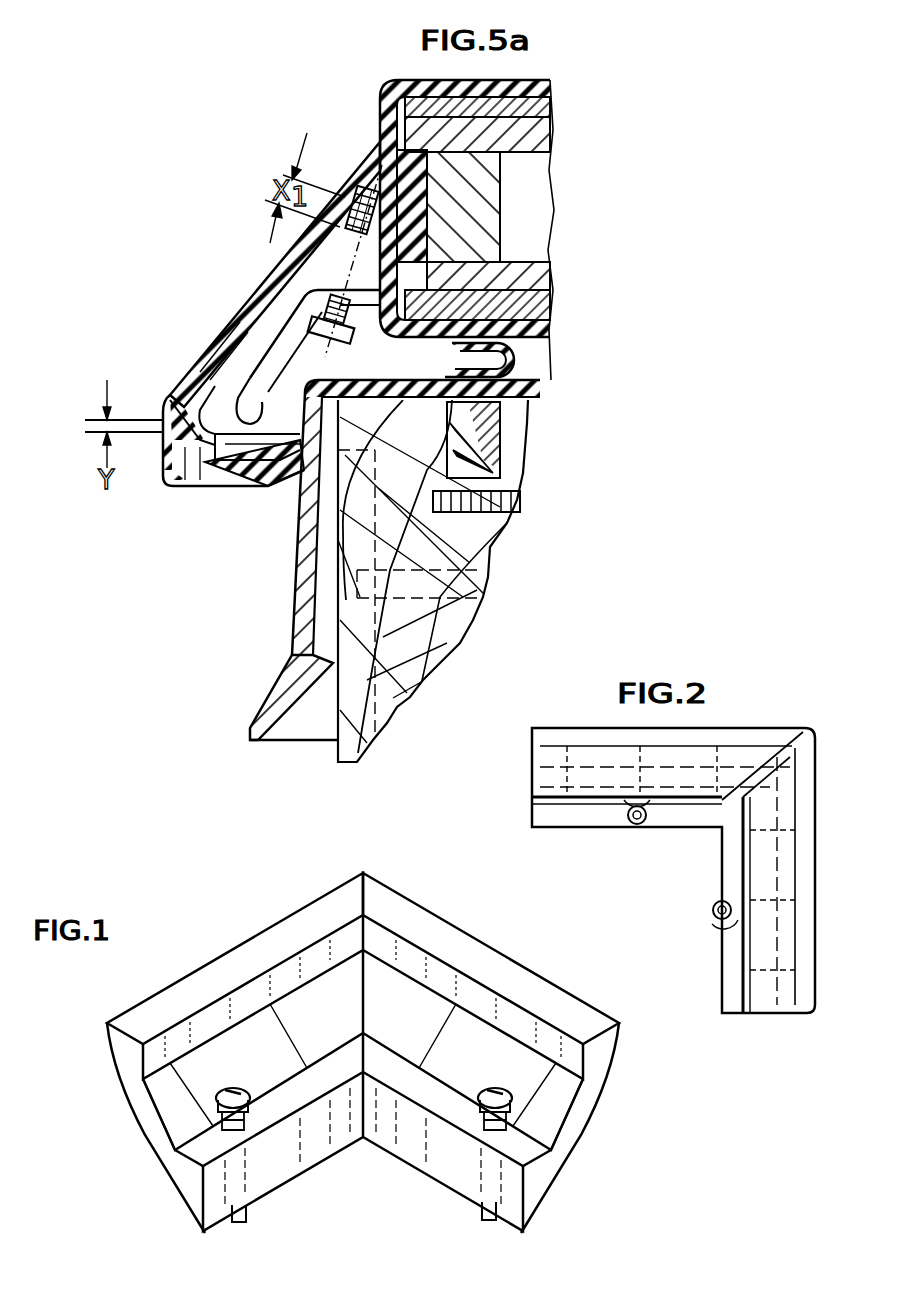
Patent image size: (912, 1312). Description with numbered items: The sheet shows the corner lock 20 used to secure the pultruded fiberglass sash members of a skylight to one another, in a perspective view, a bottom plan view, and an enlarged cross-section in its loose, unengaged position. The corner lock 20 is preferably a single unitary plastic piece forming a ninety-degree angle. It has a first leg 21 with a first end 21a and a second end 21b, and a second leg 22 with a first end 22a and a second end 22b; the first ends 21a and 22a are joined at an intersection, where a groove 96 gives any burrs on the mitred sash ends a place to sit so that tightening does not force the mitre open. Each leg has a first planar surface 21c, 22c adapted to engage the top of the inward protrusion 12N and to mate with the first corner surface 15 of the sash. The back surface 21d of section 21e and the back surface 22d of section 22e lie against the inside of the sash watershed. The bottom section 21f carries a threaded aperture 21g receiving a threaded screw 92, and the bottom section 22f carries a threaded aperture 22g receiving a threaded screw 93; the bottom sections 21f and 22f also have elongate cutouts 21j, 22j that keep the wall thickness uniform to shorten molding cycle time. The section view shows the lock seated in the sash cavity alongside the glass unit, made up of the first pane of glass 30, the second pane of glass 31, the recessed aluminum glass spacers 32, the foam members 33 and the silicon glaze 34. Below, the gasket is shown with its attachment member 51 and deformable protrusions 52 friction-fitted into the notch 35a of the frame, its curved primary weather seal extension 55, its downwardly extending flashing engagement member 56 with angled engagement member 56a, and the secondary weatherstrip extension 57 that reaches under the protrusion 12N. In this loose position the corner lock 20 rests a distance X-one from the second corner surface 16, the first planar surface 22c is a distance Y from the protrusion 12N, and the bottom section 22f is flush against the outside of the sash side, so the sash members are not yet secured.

In FIG. 5A, the inward protrusion 12N is at (212, 455).
In FIG. 5A, the first corner surface 15 is at (177, 400).
In FIG. 5A, the second corner surface 16 is at (349, 196).
In FIG. 5A, the corner lock 20 is at (240, 341).
In FIG. 2, the corner lock 20 is at (749, 715).
In FIG. 1, the corner lock 20 is at (250, 930).
In FIG. 1, the first leg 21 is at (203, 985).
In FIG. 1, the first end of first leg 21a is at (351, 1127).
In FIG. 2, the second end of first leg 21b is at (775, 1018).
In FIG. 1, the second end of first leg 21b is at (131, 1060).
In FIG. 1, the first planar surface of first leg 21c is at (137, 1022).
In FIG. 2, the back surface of first leg section 21d is at (768, 952).
In FIG. 1, the back surface of first leg section 21d is at (147, 1126).
In FIG. 1, the section of first leg 21e is at (272, 1065).
In FIG. 1, the bottom section of first leg 21f is at (265, 1165).
In FIG. 1, the threaded aperture of first leg 21g is at (166, 1165).
In FIG. 2, the elongate cutout of first leg 21j is at (818, 993).
In FIG. 1, the second leg 22 is at (491, 1052).
In FIG. 1, the first end of second leg 22a is at (385, 1135).
In FIG. 2, the second end of second leg 22b is at (531, 775).
In FIG. 1, the second end of second leg 22b is at (598, 1068).
In FIG. 5A, the first planar surface of second leg 22c is at (230, 427).
In FIG. 1, the first planar surface of second leg 22c is at (574, 957).
In FIG. 5A, the back surface of second leg section 22d is at (254, 298).
In FIG. 2, the back surface of second leg section 22d is at (578, 775).
In FIG. 1, the back surface of second leg section 22d is at (580, 1128).
In FIG. 5A, the section of second leg 22e is at (258, 352).
In FIG. 1, the section of second leg 22e is at (490, 1065).
In FIG. 1, the bottom section of second leg 22f is at (462, 1182).
In FIG. 1, the threaded aperture of second leg 22g is at (545, 1152).
In FIG. 5A, the elongate cutout of second leg 22j is at (198, 378).
In FIG. 2, the elongate cutout of second leg 22j is at (721, 745).
In FIG. 5A, the first pane of glass 30 is at (550, 140).
In FIG. 5A, the second pane of glass 31 is at (551, 282).
In FIG. 5A, the aluminum glass spacer 32 is at (498, 222).
In FIG. 5A, the foam member 33 is at (410, 158).
In FIG. 5A, the silicon glaze 34 is at (532, 114).
In FIG. 5A, the notch 35a is at (452, 472).
In FIG. 5A, the attachment member 51 is at (500, 433).
In FIG. 5A, the deformable protrusions 52 is at (458, 450).
In FIG. 5A, the primary weather seal extension 55 is at (506, 366).
In FIG. 5A, the flashing engagement member 56 is at (293, 590).
In FIG. 5A, the angled engagement member 56a is at (262, 726).
In FIG. 5A, the secondary weatherstrip extension 57 is at (276, 483).
In FIG. 2, the threaded screw 92 is at (715, 905).
In FIG. 1, the threaded screw 92 is at (228, 1093).
In FIG. 5A, the threaded screw 93 is at (352, 321).
In FIG. 2, the threaded screw 93 is at (634, 826).
In FIG. 1, the threaded screw 93 is at (514, 1112).
In FIG. 2, the groove 96 is at (796, 735).